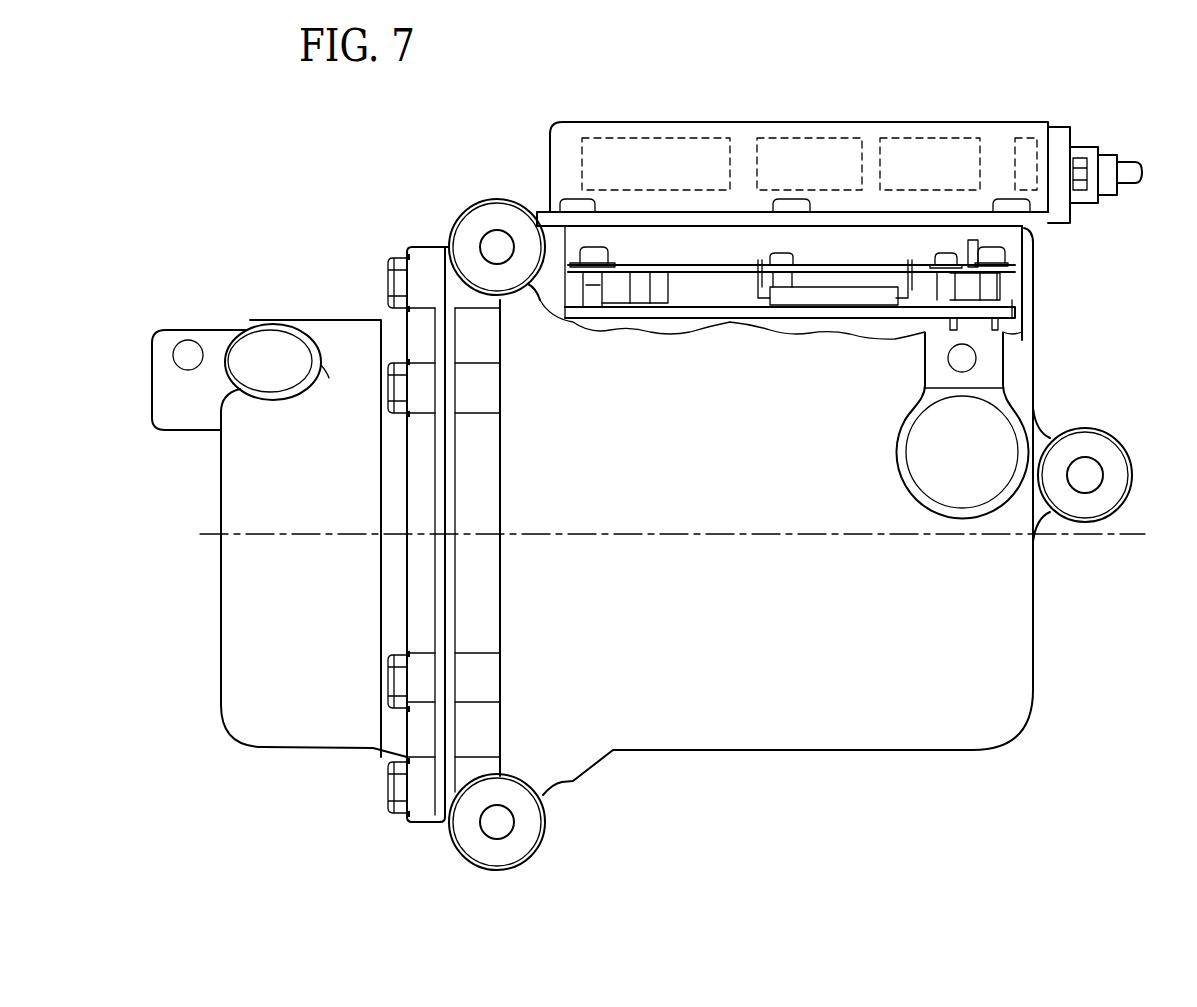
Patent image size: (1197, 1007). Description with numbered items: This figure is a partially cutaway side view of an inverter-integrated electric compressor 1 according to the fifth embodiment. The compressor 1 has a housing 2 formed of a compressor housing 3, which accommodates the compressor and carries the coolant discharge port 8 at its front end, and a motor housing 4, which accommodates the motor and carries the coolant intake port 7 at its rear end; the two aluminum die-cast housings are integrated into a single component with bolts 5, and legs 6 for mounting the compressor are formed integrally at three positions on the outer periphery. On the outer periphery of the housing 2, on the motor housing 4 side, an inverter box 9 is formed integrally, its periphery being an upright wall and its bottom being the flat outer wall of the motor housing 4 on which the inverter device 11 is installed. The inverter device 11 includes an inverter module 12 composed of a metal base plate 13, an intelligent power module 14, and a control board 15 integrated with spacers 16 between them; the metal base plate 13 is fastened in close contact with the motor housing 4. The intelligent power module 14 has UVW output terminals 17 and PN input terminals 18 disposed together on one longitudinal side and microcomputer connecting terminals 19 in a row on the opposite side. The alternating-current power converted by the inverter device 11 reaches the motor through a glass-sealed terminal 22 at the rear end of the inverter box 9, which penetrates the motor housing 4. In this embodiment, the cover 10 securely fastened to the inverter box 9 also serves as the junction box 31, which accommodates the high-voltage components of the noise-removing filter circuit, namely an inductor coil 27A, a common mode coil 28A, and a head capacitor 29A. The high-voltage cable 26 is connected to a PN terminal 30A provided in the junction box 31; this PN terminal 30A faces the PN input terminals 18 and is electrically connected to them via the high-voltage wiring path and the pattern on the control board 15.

The inverter-integrated electric compressor 1 is at (310, 158).
The housing 2 is at (337, 305).
The compressor housing 3 is at (250, 665).
The motor housing 4 is at (993, 623).
The bolts 5 is at (392, 785).
The legs 6 is at (480, 220).
The coolant intake port 7 is at (988, 427).
The coolant discharge port 8 is at (268, 345).
The inverter box 9 is at (1026, 256).
The cover 10 is at (562, 142).
The junction box 31 is at (803, 174).
The inverter device 11 is at (686, 240).
The inverter module 12 is at (840, 248).
The metal base plate 13 is at (692, 310).
The intelligent power module 14 is at (810, 300).
The control board 15 is at (642, 272).
The spacers 16 is at (593, 300).
The UVW output terminals 17 is at (915, 300).
The PN input terminals 18 is at (969, 285).
The microcomputer connecting terminals 19 is at (750, 273).
The glass-sealed terminal 22 is at (1007, 312).
The high-voltage cable 26 is at (1126, 172).
The inductor coil 27A is at (929, 135).
The common mode coil 28A is at (801, 135).
The head capacitor 29A is at (656, 135).
The PN terminal 30A is at (1024, 135).